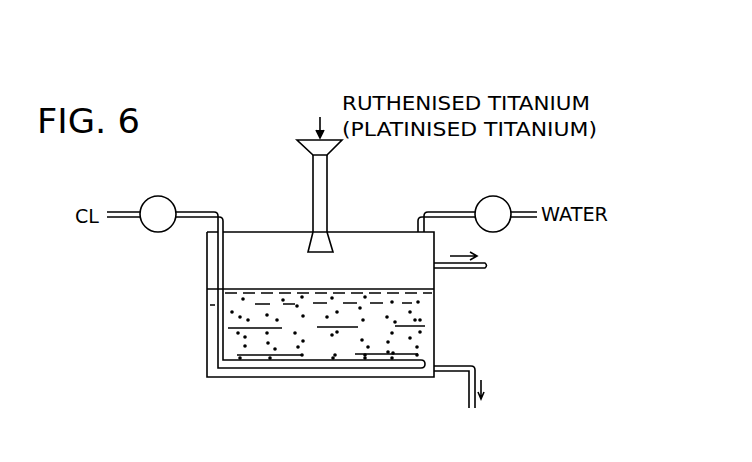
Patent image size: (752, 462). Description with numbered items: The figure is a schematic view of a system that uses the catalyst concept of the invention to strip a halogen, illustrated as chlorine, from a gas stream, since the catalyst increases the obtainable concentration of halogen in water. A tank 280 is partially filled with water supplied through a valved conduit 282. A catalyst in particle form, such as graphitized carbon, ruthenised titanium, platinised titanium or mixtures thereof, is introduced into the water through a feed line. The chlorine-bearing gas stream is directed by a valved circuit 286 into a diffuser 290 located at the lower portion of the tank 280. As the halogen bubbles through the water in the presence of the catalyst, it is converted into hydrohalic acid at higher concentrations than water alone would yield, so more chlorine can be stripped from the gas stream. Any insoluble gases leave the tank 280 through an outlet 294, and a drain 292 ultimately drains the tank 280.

The tank 280 is at (372, 377).
The valved conduit 282 is at (462, 210).
The valved circuit 286 is at (193, 212).
The diffuser 290 is at (312, 363).
The drain 292 is at (477, 369).
The outlet 294 is at (469, 268).